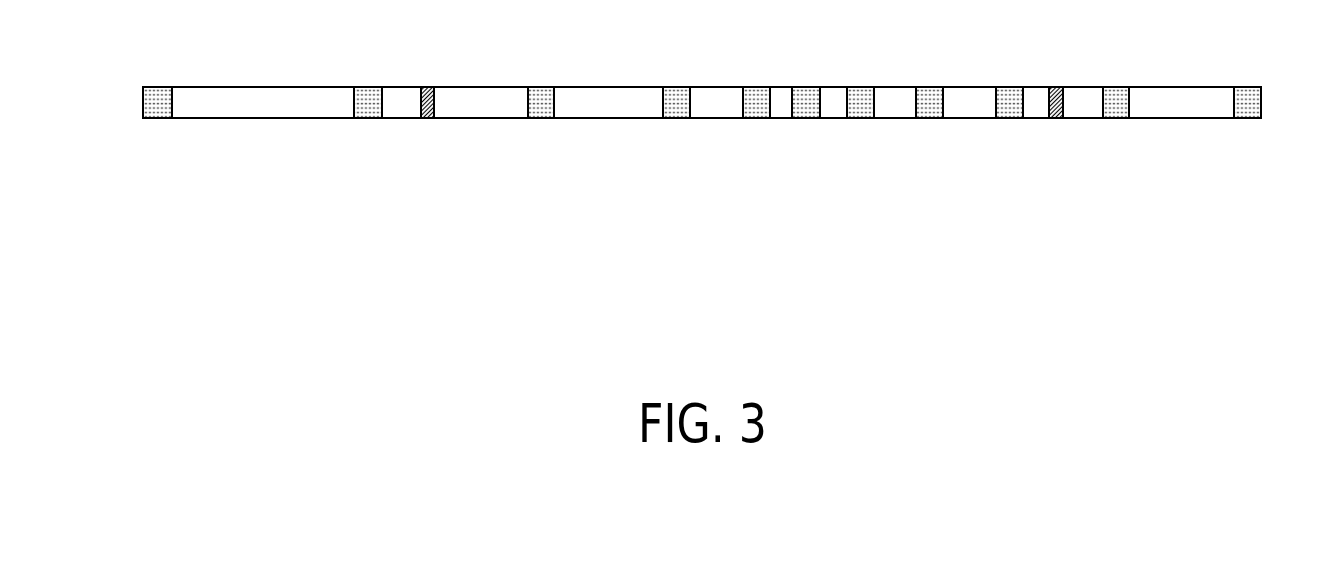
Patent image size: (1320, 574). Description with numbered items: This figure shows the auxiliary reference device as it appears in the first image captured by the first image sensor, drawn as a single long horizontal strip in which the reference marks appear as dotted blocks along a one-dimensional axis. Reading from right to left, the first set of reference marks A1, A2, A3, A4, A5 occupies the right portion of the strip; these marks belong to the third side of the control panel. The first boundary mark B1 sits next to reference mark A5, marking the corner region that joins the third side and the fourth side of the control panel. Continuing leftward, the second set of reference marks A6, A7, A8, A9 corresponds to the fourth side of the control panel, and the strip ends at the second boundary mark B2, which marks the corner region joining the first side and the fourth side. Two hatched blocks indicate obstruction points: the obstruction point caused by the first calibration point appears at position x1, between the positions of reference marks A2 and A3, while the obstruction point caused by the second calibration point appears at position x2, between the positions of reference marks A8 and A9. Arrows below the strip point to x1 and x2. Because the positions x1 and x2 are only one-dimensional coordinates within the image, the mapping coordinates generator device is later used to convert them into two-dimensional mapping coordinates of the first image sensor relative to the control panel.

The reference mark A1 is at (1247, 124).
The reference mark A2 is at (1116, 124).
The reference mark A3 is at (1009, 124).
The reference mark A4 is at (929, 124).
The reference mark A5 is at (860, 124).
The reference mark A6 is at (756, 124).
The reference mark A7 is at (676, 124).
The reference mark A8 is at (541, 124).
The reference mark A9 is at (368, 124).
The first boundary mark B1 is at (805, 82).
The second boundary mark B2 is at (158, 82).
The position x1 is at (1057, 119).
The position x2 is at (427, 119).